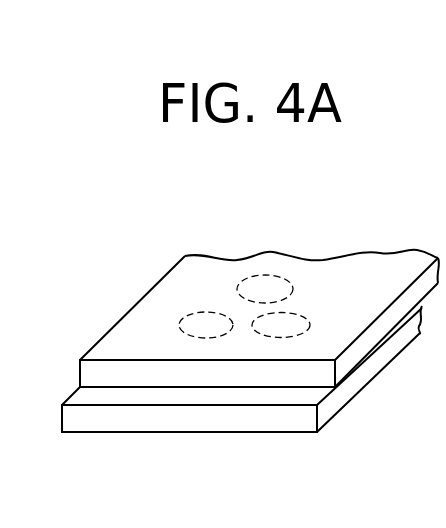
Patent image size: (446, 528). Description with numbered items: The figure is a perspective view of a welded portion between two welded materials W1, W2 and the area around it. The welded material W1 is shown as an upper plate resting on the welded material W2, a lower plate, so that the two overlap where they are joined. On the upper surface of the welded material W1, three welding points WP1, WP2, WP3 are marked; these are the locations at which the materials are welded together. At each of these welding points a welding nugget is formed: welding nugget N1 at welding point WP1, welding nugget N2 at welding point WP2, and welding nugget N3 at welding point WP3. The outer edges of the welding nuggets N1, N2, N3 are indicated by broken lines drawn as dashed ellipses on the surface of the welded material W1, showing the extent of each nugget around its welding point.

The welded material W1 is at (372, 283).
The welded material W2 is at (357, 393).
The welding point WP1 is at (265, 292).
The welding point WP2 is at (282, 320).
The welding point WP3 is at (208, 322).
The welding nugget N1 is at (240, 287).
The welding nugget N2 is at (308, 317).
The welding nugget N3 is at (178, 320).